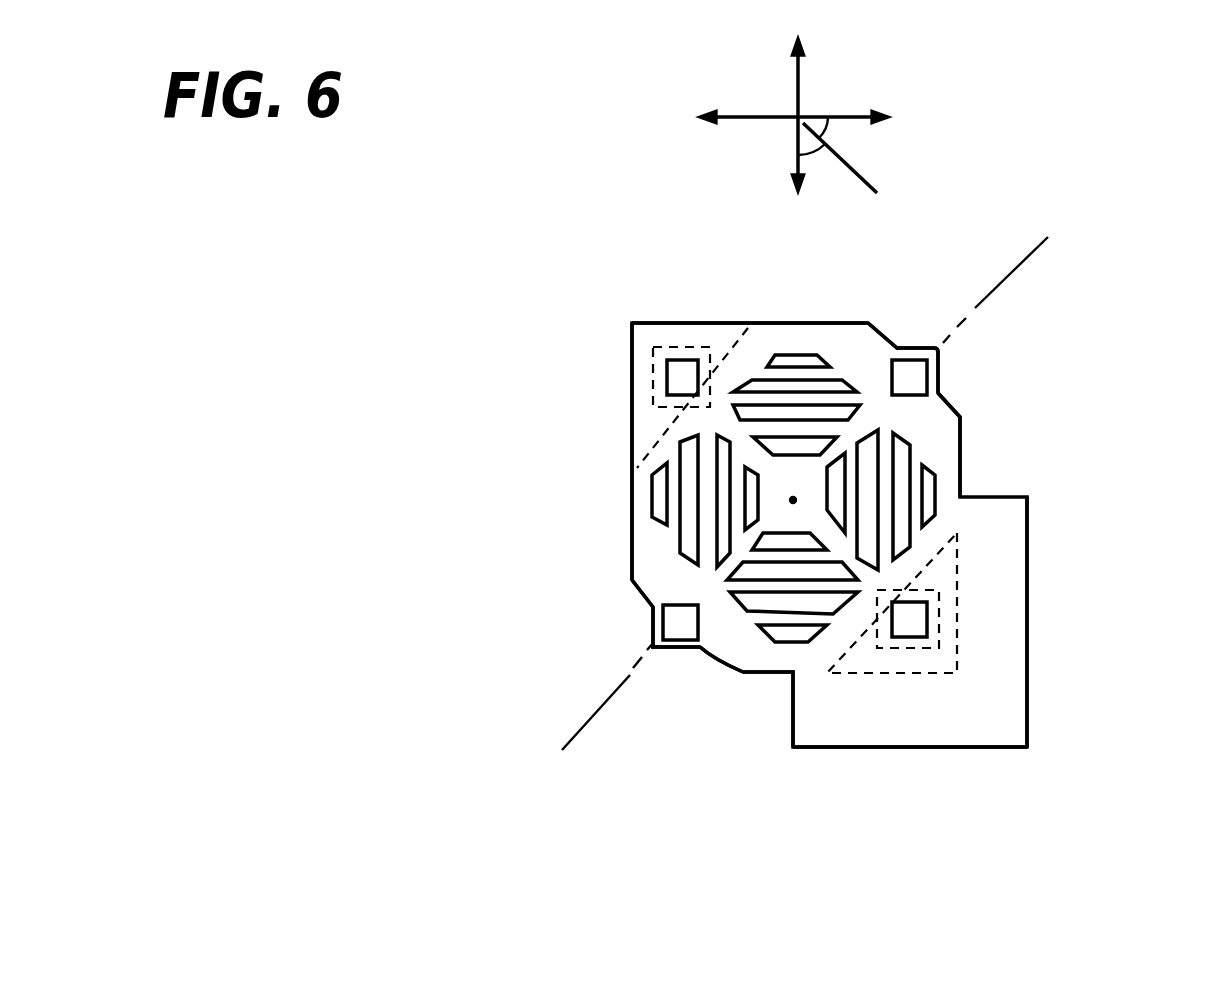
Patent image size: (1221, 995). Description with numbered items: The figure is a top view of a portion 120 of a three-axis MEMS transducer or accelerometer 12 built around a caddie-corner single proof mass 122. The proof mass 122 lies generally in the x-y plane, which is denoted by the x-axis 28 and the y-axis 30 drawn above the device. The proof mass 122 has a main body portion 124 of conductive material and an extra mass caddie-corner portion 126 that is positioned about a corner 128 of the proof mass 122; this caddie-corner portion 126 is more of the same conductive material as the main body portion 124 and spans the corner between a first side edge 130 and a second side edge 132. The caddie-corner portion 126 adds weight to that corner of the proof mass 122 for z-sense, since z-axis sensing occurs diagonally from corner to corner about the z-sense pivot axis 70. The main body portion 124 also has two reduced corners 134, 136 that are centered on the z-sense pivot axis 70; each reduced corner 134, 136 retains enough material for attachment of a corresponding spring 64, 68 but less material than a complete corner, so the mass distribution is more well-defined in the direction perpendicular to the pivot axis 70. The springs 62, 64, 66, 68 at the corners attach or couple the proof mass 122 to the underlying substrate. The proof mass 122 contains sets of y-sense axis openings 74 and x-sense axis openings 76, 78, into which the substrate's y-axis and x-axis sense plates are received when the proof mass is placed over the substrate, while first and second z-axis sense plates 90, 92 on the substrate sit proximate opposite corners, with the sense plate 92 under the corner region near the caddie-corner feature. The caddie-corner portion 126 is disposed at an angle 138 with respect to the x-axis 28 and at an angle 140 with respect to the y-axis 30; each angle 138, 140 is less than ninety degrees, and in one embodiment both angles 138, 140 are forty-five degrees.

The portion of a three-axis MEMS transducer/accelerometer 120 is at (1015, 172).
The x-axis 28 is at (845, 115).
The y-axis 30 is at (802, 77).
The angle 138 is at (827, 127).
The angle 140 is at (800, 153).
The first z-axis sense plate 90 is at (727, 322).
The spring 62 is at (683, 375).
The spring 64 is at (905, 378).
The spring 66 is at (910, 622).
The spring 68 is at (680, 622).
The upper heat spreader fin group 12 is at (800, 385).
The y-sense axis openings 74 is at (792, 632).
The x-sense axis openings 76 is at (893, 510).
The x-sense axis openings 78 is at (728, 497).
The reduced corner 134 is at (932, 327).
The z-sense pivot axis 70 is at (1013, 273).
The caddie-corner single proof mass 122 is at (630, 400).
The second side edge 132 is at (965, 458).
The second z-axis sense plate 92 is at (945, 580).
The reduced corner 136 is at (616, 648).
The main body portion 124 is at (735, 664).
The first side edge 130 is at (762, 675).
The extra mass caddie-corner portion 126 is at (932, 718).
The corner 128 is at (1058, 762).